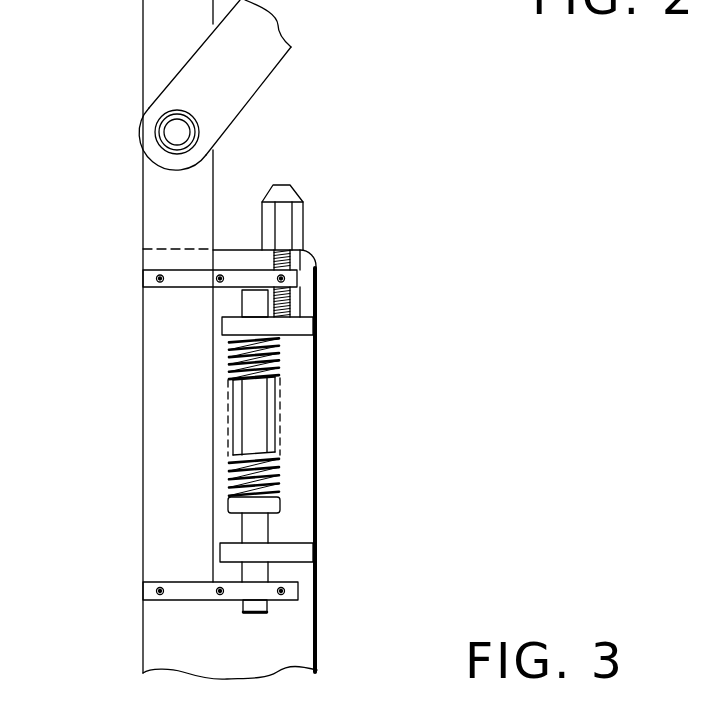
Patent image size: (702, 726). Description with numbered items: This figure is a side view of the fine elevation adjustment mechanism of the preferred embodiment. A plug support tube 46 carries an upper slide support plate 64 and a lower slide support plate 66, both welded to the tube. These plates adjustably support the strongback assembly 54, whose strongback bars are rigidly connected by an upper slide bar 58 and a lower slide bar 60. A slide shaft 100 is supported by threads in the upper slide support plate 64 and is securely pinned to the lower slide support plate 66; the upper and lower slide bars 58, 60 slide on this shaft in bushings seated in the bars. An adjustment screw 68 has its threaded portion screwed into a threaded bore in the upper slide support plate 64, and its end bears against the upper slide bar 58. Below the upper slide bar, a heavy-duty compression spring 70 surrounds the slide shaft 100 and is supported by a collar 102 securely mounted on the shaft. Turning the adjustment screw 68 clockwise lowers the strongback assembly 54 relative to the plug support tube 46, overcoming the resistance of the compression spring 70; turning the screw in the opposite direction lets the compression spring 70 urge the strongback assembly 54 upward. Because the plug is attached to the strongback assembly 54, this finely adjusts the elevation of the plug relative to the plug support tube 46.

The plug support tube 46 is at (163, 43).
The strongback assembly 54 is at (318, 643).
The upper slide bar 58 is at (305, 326).
The lower slide bar 60 is at (305, 550).
The upper slide support plate 64 is at (180, 286).
The lower slide support plate 66 is at (177, 588).
The adjustment screw 68 is at (285, 231).
The compression spring 70 is at (276, 360).
The slide shaft 100 is at (258, 425).
The collar 102 is at (272, 503).